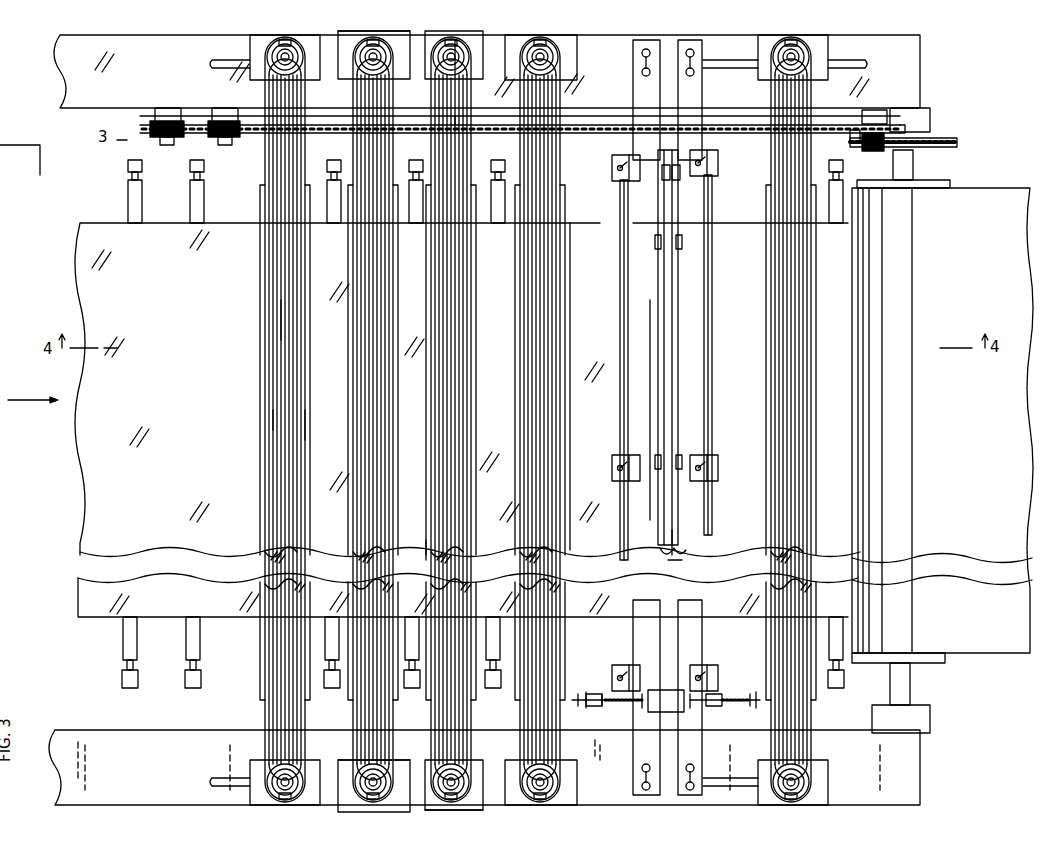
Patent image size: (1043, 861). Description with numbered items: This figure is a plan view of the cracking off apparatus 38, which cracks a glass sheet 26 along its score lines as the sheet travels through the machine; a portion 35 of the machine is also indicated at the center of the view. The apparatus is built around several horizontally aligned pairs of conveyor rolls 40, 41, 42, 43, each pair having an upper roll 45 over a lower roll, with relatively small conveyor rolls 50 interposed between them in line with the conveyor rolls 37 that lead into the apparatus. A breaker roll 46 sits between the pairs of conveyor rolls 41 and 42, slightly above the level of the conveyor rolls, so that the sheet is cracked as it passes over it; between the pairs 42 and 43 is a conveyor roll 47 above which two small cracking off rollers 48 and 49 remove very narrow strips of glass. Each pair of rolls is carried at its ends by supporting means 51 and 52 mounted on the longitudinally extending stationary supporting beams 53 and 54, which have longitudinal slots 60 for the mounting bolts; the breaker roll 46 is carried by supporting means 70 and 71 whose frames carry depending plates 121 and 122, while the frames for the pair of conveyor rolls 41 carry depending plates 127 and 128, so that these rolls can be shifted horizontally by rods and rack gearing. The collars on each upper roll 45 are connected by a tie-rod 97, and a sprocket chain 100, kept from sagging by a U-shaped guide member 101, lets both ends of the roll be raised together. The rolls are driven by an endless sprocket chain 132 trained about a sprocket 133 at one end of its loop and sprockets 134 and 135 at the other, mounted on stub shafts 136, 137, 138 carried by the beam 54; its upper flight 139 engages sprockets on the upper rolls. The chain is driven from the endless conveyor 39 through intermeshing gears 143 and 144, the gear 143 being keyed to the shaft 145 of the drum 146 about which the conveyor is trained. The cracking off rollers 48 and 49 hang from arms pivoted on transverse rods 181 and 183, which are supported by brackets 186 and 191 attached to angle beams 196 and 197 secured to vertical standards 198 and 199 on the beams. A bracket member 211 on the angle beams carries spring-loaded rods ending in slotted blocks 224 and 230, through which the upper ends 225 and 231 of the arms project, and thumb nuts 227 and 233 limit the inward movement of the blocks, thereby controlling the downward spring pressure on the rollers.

The glass sheet 26 is at (84, 234).
The panel 35 is at (584, 225).
The conveyor rolls 37 is at (185, 640).
The cracking off apparatus 38 is at (260, 664).
The endless conveyor 39 is at (978, 198).
The pair of conveyor rolls 40 is at (260, 448).
The pair of conveyor rolls 41 is at (350, 353).
The pair of conveyor rolls 42 is at (502, 376).
The pair of conveyor rolls 43 is at (767, 336).
The upper roll 45 is at (565, 379).
The breaker roll 46 is at (458, 557).
The conveyor roll 47 is at (684, 566).
The cracking off roller 48 is at (659, 207).
The cracking off roller 49 is at (684, 368).
The conveyor rolls 50 is at (495, 660).
The supporting means 51 is at (348, 750).
The supporting means 52 is at (348, 84).
The supporting beam 53 is at (108, 730).
The supporting beam 54 is at (62, 53).
The slot 60 is at (226, 62).
The supporting means 70 is at (470, 755).
The supporting means 71 is at (479, 50).
The tie-rod 97 is at (281, 316).
The sprocket chain 100 is at (270, 417).
The guide member 101 is at (306, 438).
The depending plate 121 is at (483, 803).
The depending plate 122 is at (480, 33).
The depending plate 127 is at (338, 808).
The depending plate 128 is at (398, 32).
The sprocket chain 132 is at (590, 136).
The sprocket 133 is at (852, 114).
The sprocket 134 is at (224, 144).
The sprocket 135 is at (156, 135).
The stub shaft 136 is at (851, 140).
The stub shaft 137 is at (226, 134).
The stub shaft 138 is at (218, 136).
The upper flight 139 is at (486, 128).
The gear 143 is at (947, 144).
The gear 144 is at (854, 148).
The shaft 145 is at (912, 164).
The drum 146 is at (918, 198).
The transverse rod 181 is at (620, 260).
The transverse rod 183 is at (712, 252).
The bracket 186 is at (620, 170).
The bracket 191 is at (710, 152).
The angle beam 196 is at (630, 404).
The angle beam 197 is at (702, 380).
The vertical standard 198 is at (694, 787).
The vertical standard 199 is at (676, 32).
The bracket member 211 is at (648, 714).
The slotted block 224 is at (608, 710).
The upper end of arm 225 is at (610, 684).
The thumb nut 227 is at (576, 684).
The slotted block 230 is at (714, 712).
The upper end of arm 231 is at (718, 698).
The thumb nut 233 is at (758, 676).